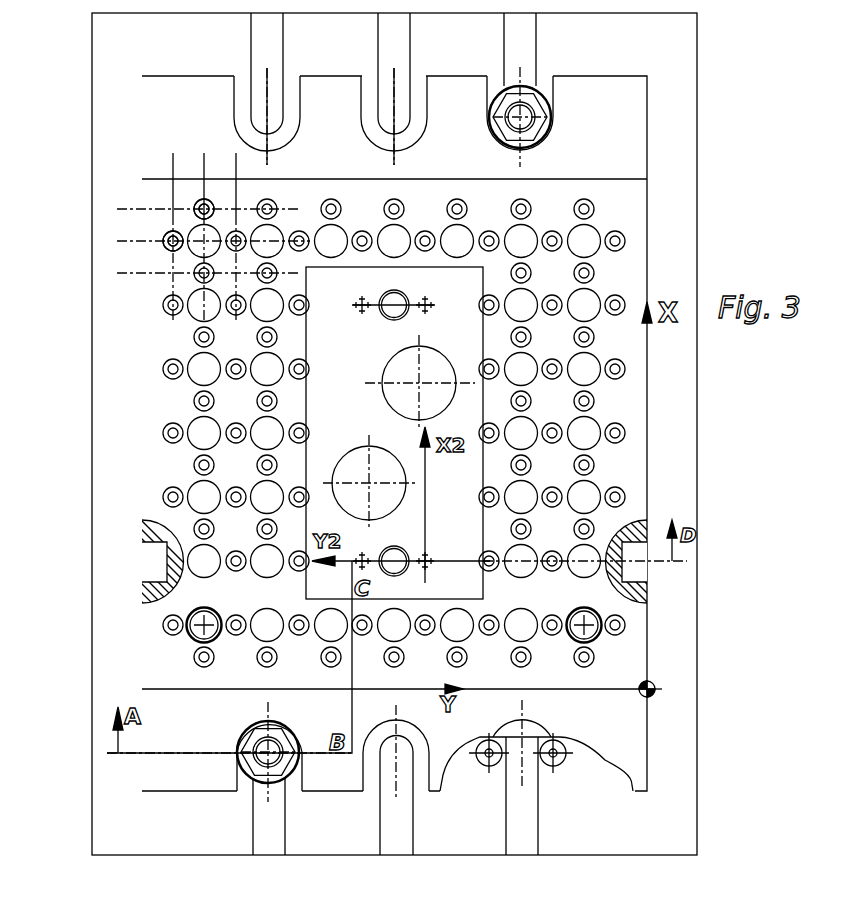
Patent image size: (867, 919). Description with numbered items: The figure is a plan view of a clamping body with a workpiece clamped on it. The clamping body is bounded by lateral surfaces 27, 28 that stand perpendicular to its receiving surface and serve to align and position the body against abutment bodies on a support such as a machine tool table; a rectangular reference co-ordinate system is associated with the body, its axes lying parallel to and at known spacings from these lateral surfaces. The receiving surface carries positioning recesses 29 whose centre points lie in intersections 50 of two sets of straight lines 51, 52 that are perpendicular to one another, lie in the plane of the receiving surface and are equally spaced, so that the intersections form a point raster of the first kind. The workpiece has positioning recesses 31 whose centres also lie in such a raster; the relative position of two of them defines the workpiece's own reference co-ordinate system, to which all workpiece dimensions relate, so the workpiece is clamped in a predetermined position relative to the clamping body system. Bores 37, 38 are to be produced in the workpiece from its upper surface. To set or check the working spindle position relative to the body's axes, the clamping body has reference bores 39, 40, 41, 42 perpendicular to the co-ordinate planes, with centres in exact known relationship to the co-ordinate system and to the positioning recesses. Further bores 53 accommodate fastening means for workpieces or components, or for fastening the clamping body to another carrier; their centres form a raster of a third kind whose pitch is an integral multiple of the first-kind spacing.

The lateral surface 27 is at (610, 75).
The lateral surface 28 is at (193, 792).
The positioning recess 29 is at (617, 625).
The positioning recess 31 is at (437, 300).
The bore 37 is at (392, 498).
The bore 38 is at (435, 366).
The reference bore 39 is at (155, 552).
The reference bore 40 is at (638, 571).
The reference bore 41 is at (197, 632).
The reference bore 42 is at (593, 637).
The intersection 50 is at (203, 207).
The set of straight lines 51 is at (128, 210).
The set of straight lines 52 is at (235, 160).
The bore 53 is at (590, 240).